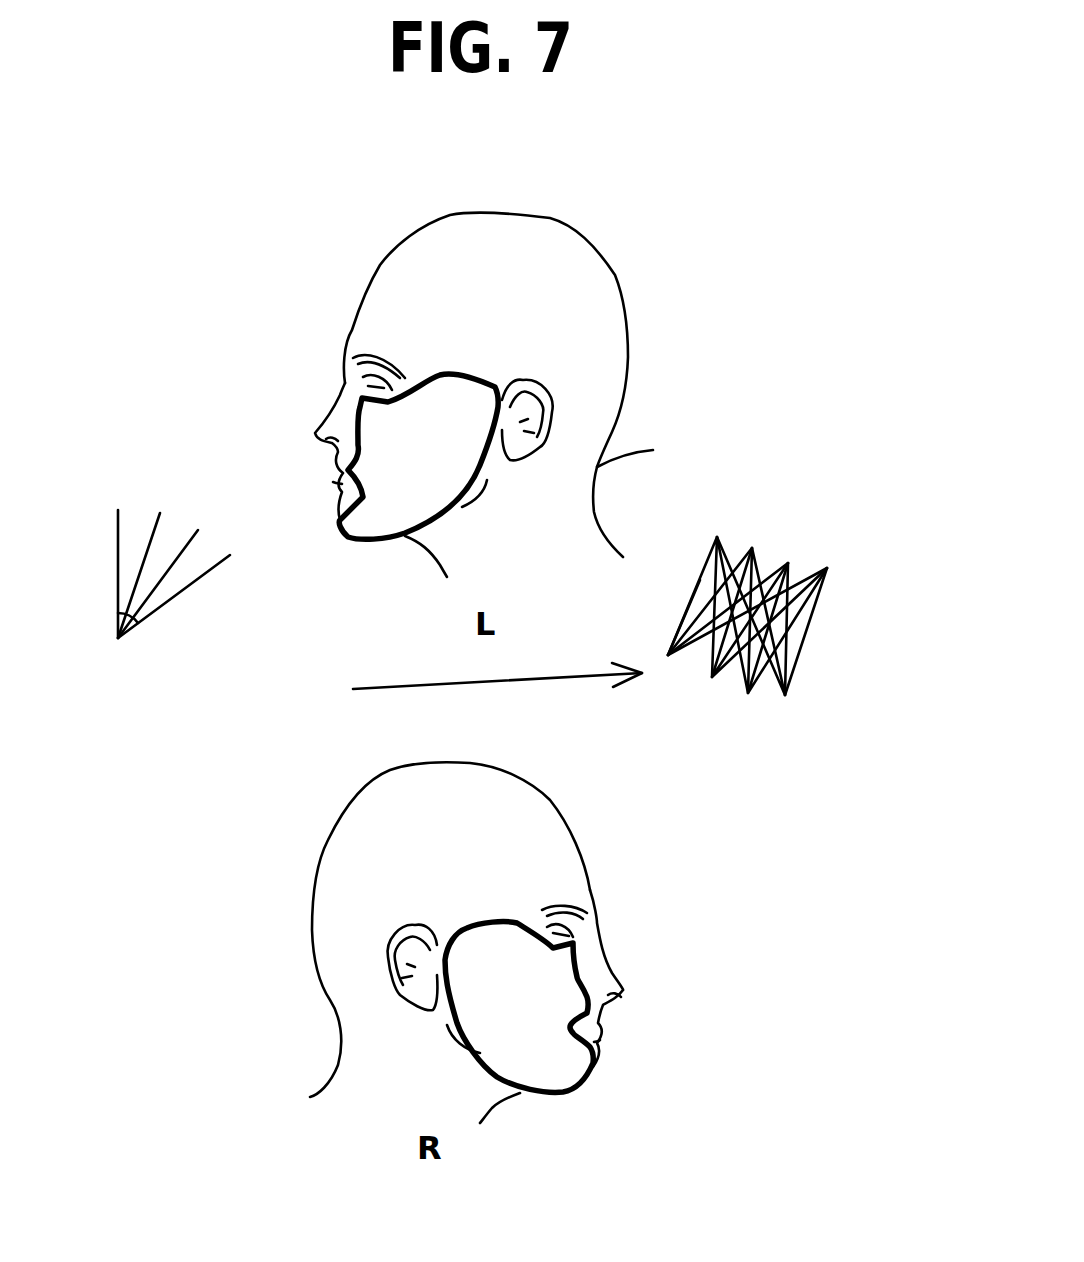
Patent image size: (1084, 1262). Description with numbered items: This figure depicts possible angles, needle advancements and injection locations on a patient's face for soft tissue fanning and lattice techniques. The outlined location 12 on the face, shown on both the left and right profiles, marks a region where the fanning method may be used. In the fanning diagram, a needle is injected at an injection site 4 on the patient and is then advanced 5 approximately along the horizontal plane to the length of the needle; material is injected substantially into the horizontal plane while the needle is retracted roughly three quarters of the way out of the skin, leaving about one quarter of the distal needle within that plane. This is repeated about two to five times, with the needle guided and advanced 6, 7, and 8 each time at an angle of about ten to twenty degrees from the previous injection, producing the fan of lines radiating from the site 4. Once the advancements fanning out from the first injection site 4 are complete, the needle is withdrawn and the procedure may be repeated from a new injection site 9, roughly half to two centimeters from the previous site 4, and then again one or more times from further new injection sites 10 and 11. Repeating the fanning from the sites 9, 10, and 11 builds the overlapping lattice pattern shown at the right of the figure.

The injection site 4 is at (122, 650).
The needle advancement 5 is at (205, 567).
The needle advancement 6 is at (175, 547).
The needle advancement 7 is at (147, 553).
The needle advancement 8 is at (115, 545).
The new injection site 9 is at (747, 700).
The new injection site 10 is at (708, 685).
The new injection site 11 is at (667, 658).
The location 12 is at (433, 447).